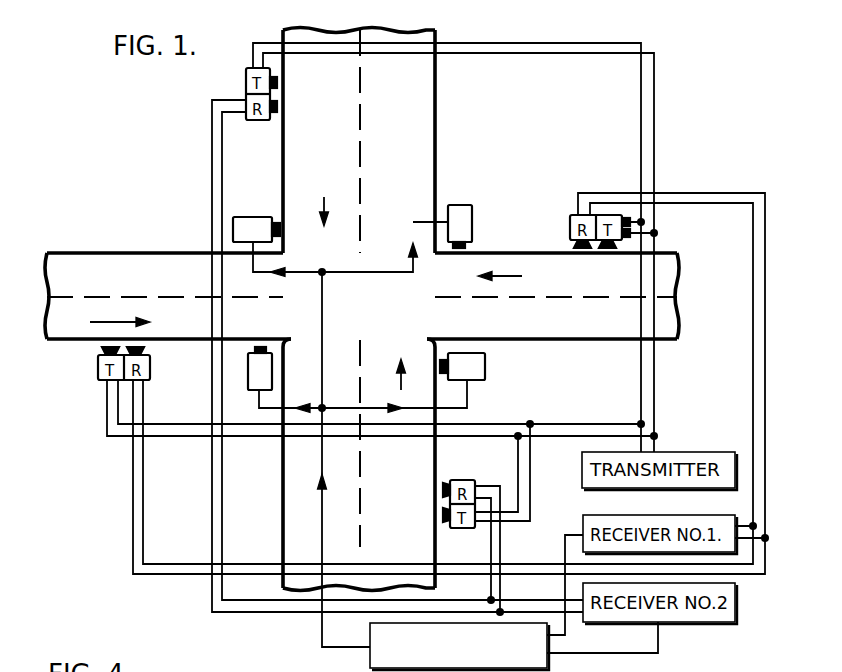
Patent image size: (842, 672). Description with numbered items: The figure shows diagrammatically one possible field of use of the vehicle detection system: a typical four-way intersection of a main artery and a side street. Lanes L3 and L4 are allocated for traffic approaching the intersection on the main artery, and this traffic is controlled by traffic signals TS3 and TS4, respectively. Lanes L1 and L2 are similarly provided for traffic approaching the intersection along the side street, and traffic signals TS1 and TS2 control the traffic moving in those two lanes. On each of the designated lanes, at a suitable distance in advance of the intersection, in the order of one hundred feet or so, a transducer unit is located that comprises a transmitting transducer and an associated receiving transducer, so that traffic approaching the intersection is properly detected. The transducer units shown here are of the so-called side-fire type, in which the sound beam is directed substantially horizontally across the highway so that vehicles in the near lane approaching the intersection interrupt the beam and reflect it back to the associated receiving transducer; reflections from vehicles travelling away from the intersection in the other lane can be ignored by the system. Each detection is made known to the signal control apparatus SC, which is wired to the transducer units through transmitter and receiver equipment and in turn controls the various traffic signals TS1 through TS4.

The traffic signal TS1 is at (242, 224).
The traffic signal TS2 is at (485, 368).
The traffic signal TS3 is at (253, 383).
The traffic signal TS4 is at (460, 210).
The lane L1 is at (487, 277).
The lane L2 is at (133, 322).
The lane L3 is at (322, 224).
The lane L4 is at (399, 362).
The signal control apparatus SC is at (370, 656).